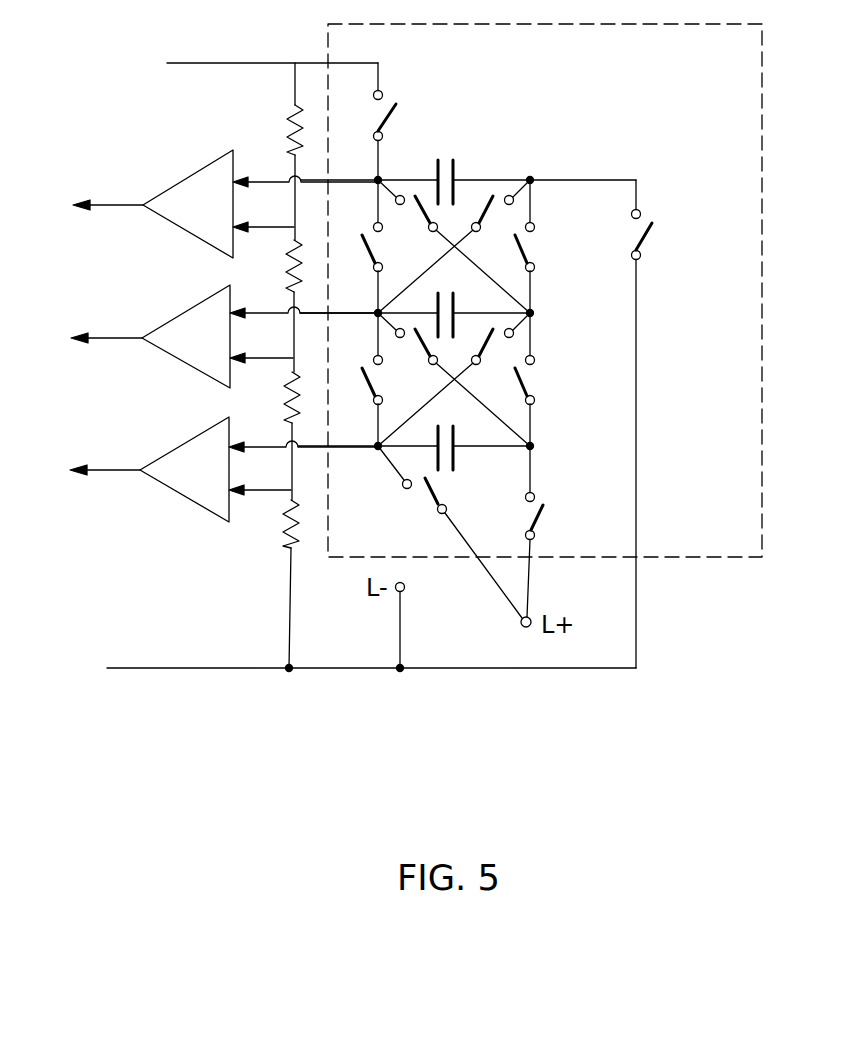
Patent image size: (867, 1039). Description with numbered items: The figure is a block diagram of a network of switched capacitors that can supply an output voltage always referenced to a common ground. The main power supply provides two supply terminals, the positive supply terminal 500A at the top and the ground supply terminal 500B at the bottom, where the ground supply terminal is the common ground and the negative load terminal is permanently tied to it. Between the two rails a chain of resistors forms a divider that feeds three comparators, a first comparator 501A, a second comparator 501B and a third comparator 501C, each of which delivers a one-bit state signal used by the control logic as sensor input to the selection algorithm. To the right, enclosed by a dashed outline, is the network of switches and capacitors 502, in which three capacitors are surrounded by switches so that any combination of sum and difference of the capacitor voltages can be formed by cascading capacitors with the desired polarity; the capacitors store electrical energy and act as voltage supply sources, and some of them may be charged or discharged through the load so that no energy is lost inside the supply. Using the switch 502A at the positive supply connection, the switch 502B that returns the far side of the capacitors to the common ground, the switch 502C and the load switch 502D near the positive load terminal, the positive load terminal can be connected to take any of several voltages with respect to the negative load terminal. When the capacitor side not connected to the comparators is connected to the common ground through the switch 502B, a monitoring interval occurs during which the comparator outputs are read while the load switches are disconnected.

The Vdd supply terminal 500A is at (178, 63).
The Vss supply terminal 500B is at (157, 668).
The first comparator 501A is at (190, 176).
The second comparator 501B is at (188, 309).
The third comparator 501C is at (184, 442).
The network of switches and capacitors 502 is at (762, 293).
The switch 502A is at (396, 118).
The switch 502B is at (646, 232).
The switch 502C is at (545, 520).
The load switch 502D is at (431, 500).